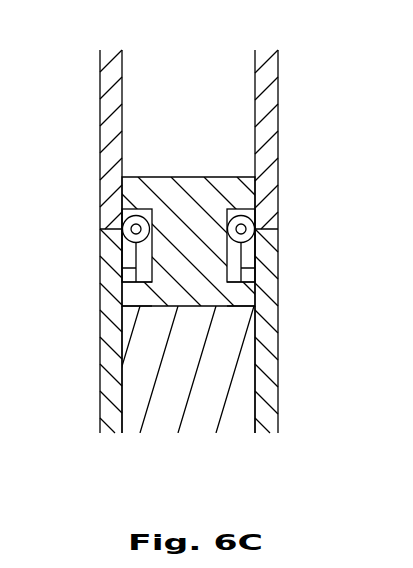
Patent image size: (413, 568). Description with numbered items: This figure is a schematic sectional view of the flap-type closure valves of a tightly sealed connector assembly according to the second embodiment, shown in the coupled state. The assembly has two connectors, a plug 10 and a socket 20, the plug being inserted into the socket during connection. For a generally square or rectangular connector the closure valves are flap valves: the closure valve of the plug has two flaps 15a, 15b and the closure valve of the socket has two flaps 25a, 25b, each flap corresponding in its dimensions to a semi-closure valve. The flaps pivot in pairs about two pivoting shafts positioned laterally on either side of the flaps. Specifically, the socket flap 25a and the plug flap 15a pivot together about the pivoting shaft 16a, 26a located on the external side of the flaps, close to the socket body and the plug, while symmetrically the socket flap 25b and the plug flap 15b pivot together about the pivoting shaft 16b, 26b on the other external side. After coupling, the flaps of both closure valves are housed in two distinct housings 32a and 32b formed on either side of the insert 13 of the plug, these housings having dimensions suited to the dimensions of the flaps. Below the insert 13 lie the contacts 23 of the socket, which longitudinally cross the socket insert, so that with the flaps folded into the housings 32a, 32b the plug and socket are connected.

The plug 10 is at (317, 85).
The socket 20 is at (316, 395).
The insert of the plug 13 is at (196, 226).
The pivoting shaft 16a is at (152, 215).
The pivoting shaft 16b is at (234, 203).
The pivoting shaft 26a is at (147, 214).
The pivoting shaft 26b is at (250, 219).
The flap of the socket closure valve 25a is at (130, 258).
The flap of the socket closure valve 25b is at (243, 258).
The flap of the plug closure valve 15a is at (122, 281).
The flap of the plug closure valve 15b is at (247, 290).
The housing 32a is at (137, 293).
The housing 32b is at (238, 297).
The contacts 23 is at (193, 378).